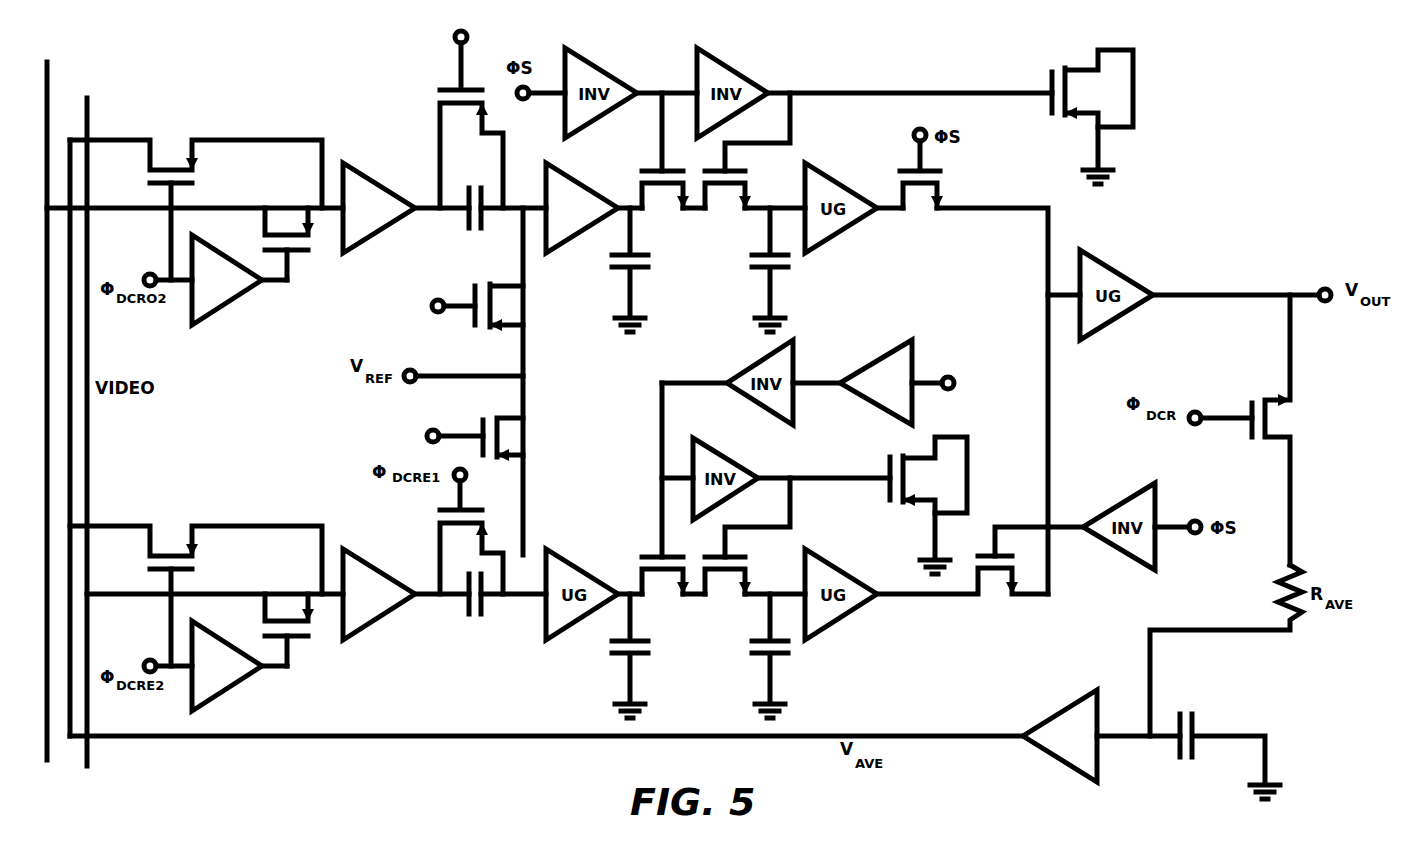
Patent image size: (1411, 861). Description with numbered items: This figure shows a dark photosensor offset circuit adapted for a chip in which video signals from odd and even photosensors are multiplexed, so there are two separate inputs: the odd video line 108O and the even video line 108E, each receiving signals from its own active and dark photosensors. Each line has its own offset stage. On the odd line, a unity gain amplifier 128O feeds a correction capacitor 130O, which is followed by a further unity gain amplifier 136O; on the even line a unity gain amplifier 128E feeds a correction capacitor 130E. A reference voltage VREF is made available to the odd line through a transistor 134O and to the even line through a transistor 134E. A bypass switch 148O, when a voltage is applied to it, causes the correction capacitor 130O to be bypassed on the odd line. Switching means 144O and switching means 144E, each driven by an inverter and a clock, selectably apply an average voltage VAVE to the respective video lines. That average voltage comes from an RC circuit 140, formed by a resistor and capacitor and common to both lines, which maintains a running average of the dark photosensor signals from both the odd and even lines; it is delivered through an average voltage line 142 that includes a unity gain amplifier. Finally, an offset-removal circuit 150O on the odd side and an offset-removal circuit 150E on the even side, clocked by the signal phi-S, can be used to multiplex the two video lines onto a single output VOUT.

The odd video line 108O is at (50, 106).
The even video line 108E is at (90, 113).
The unity gain amplifier 128O is at (382, 182).
The unity gain amplifier 128E is at (378, 620).
The correction capacitor 130O is at (462, 214).
The correction capacitor 130E is at (594, 558).
The transistor 134O is at (507, 310).
The transistor 134E is at (505, 421).
The unity gain amplifier 136O is at (597, 192).
The RC circuit 140 is at (1197, 727).
The average voltage line 142 is at (950, 733).
The switching means 144O is at (242, 298).
The switching means 144E is at (230, 692).
The bypass switch 148O is at (440, 88).
The offset-removal circuit 150O is at (1052, 75).
The offset-removal circuit 150E is at (926, 380).